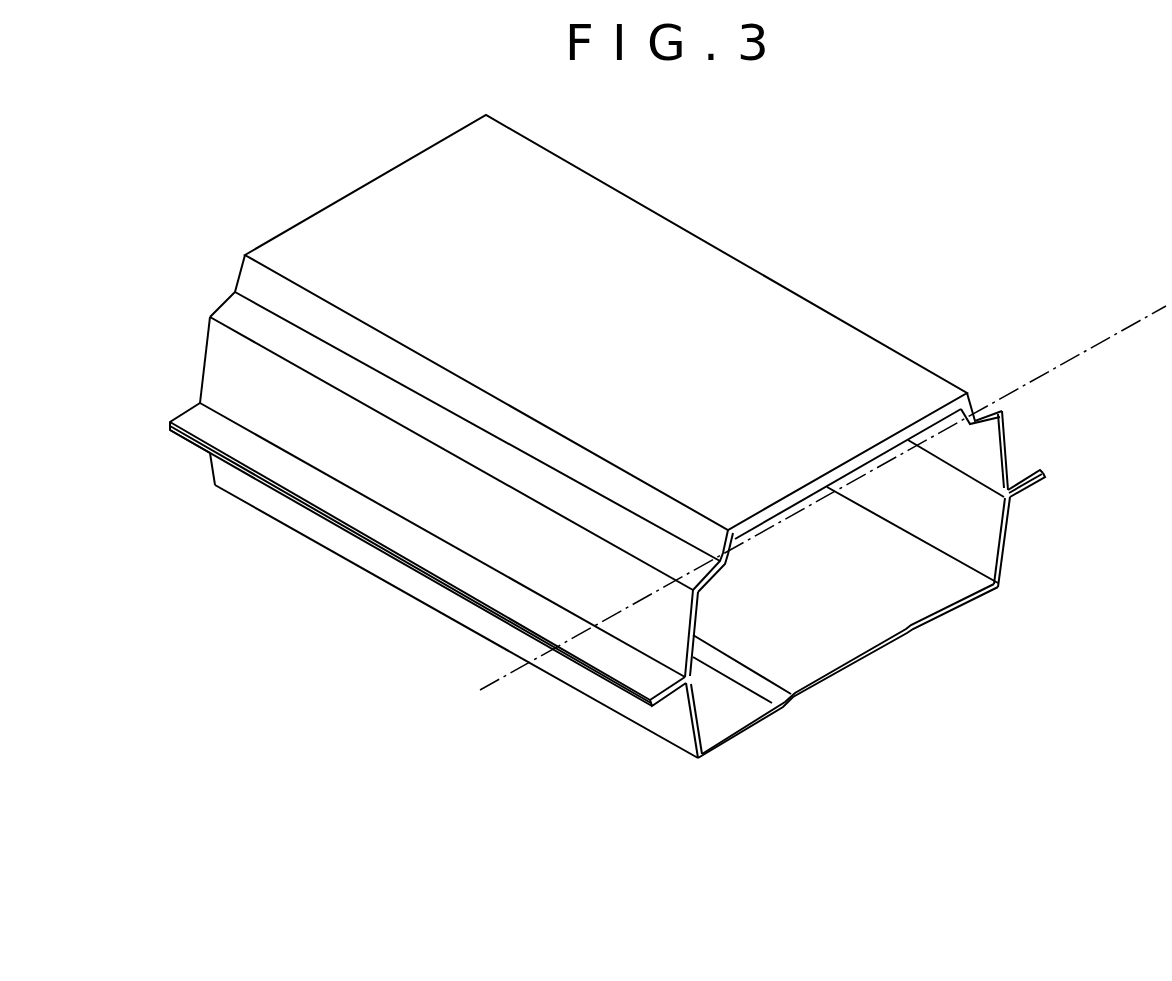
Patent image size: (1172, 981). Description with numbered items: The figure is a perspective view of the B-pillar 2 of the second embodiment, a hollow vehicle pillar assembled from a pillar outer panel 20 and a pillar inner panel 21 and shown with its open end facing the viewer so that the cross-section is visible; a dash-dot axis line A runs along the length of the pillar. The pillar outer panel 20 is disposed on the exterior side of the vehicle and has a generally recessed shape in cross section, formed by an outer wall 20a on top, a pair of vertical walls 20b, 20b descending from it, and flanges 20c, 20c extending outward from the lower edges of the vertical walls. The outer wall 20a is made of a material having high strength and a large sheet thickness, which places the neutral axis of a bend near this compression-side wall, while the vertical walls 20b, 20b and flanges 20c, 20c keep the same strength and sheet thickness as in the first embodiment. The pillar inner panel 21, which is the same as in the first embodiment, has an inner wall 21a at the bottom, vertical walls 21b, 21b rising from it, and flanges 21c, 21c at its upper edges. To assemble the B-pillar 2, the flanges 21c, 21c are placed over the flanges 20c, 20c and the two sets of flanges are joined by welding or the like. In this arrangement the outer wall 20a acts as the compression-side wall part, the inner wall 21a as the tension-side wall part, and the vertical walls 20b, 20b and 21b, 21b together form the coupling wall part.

The B-pillar 2 is at (797, 200).
The pillar outer panel 20 is at (1003, 411).
The outer wall 20a is at (795, 330).
The vertical walls 20b is at (1006, 435).
The flanges 20c is at (1033, 472).
The pillar inner panel 21 is at (1008, 535).
The inner wall 21a is at (928, 632).
The vertical walls 21b is at (1006, 570).
The flanges 21c is at (1036, 498).
The axis line A is at (823, 460).